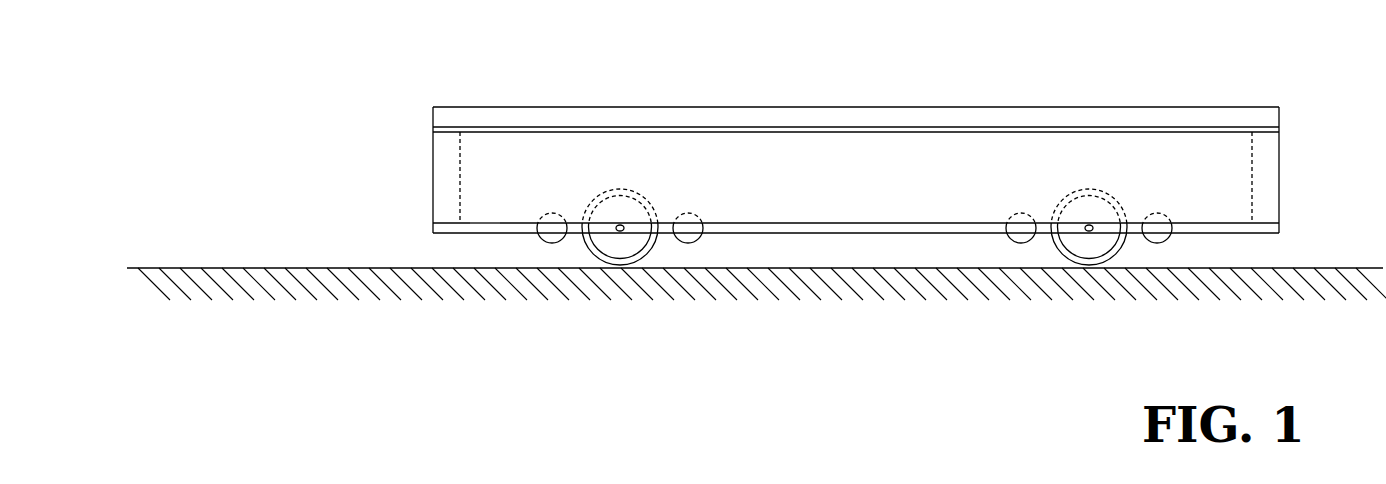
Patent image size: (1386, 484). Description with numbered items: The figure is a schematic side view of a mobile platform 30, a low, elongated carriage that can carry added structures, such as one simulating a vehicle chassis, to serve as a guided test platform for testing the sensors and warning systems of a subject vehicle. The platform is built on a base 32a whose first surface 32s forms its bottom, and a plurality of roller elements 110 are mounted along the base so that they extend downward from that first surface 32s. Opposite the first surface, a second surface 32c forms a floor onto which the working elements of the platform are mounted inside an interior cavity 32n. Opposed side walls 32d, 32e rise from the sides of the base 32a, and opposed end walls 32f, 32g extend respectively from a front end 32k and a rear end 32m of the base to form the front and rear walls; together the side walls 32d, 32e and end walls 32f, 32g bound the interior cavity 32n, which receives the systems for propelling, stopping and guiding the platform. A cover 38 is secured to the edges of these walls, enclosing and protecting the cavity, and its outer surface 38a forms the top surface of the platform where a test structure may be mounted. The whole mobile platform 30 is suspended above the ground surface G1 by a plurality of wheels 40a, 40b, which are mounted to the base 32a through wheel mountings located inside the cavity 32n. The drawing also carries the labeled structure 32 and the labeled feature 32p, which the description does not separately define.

The mobile platform 30 is at (166, 88).
The housing 32 is at (921, 184).
The base 32a is at (450, 233).
The second surface 32c is at (515, 233).
The side wall 32d is at (845, 189).
The side wall 32e is at (884, 189).
The end wall 32f is at (450, 190).
The end wall 32g is at (1258, 176).
The front end 32k is at (433, 231).
The rear end 32m is at (1270, 230).
The interior cavity 32n is at (957, 165).
The front wall 32p is at (433, 173).
The first surface 32s is at (482, 233).
The cover 38 is at (762, 117).
The cover outer surface 38a is at (697, 107).
The wheel 40a is at (655, 251).
The wheel 40b is at (1115, 256).
The roller elements 110 is at (552, 243).
The ground surface G1 is at (236, 268).